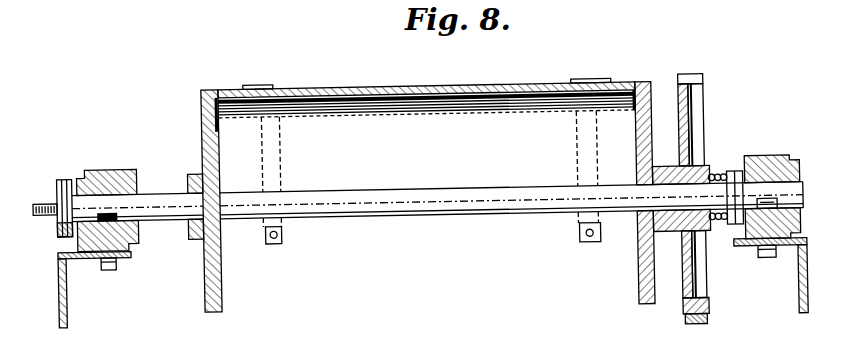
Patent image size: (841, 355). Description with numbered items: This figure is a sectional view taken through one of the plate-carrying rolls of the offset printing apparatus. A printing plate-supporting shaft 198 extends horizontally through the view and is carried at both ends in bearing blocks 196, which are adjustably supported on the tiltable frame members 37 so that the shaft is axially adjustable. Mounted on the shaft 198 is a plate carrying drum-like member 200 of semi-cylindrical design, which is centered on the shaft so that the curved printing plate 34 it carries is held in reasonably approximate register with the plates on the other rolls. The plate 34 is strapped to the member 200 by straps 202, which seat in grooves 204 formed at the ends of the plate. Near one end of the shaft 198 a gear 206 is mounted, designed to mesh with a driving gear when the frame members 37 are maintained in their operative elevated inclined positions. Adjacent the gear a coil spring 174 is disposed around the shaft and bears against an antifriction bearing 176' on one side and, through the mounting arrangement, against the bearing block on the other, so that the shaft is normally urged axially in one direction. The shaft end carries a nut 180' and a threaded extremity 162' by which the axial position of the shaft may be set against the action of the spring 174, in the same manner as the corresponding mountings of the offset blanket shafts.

The curved printing plate 34 is at (469, 86).
The frame member 37 is at (65, 304).
The threaded shaft end 162' is at (60, 184).
The coil spring 174 is at (723, 226).
The collar 176' is at (729, 183).
The nut 180' is at (58, 189).
The bearing block 196 is at (108, 165).
The printing plate-supporting shaft 198 is at (470, 195).
The plate carrying drum-like member 200 is at (372, 94).
The strap 202 is at (268, 72).
The groove 204 is at (283, 88).
The gear 206 is at (705, 88).